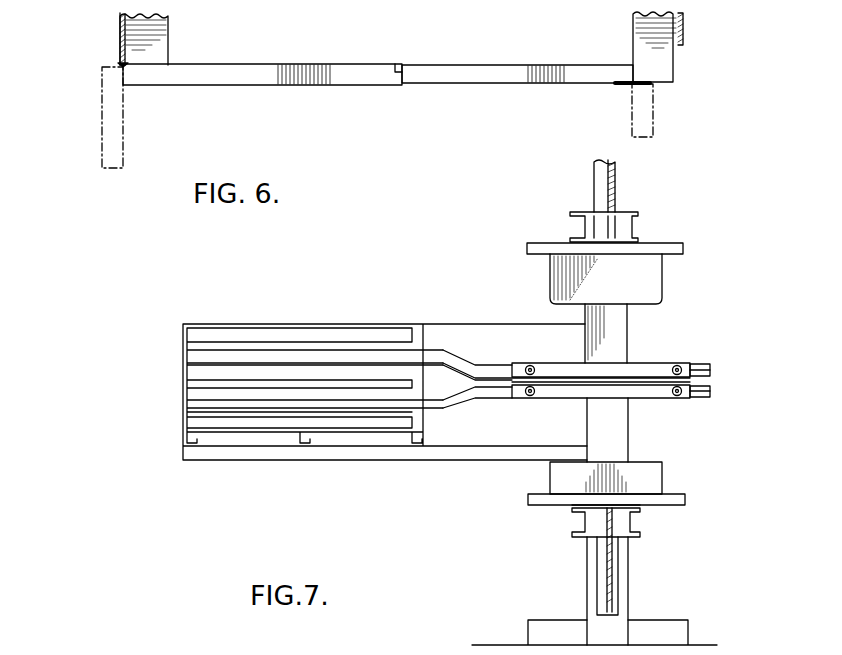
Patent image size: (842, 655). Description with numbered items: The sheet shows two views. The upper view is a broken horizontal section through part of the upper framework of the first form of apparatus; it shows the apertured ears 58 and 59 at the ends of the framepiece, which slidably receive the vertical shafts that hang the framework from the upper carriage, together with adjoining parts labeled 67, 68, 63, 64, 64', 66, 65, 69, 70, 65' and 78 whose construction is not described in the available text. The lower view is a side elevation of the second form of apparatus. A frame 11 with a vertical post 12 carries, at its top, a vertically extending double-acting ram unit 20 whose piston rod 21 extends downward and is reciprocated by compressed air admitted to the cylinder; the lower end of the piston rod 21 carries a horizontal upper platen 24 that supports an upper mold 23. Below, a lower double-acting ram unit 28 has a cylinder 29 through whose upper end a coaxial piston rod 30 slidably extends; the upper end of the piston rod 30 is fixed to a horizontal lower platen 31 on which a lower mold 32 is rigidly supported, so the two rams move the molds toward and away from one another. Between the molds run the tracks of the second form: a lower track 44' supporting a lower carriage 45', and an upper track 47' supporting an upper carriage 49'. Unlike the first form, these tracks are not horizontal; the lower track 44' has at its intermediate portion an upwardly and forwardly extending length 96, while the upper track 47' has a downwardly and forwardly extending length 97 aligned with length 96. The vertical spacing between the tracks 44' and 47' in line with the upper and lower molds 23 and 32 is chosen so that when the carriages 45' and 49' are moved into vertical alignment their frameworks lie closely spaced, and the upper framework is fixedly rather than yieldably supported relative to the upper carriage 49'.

In FIG. 6, the ear 58 is at (119, 42).
In FIG. 6, the block 67 is at (168, 24).
In FIG. 6, the joint 68 is at (121, 65).
In FIG. 6, the beam section 64 is at (262, 97).
In FIG. 6, the post 64' is at (79, 117).
In FIG. 6, the beam assembly 63 is at (266, 50).
In FIG. 6, the latch 66 is at (399, 71).
In FIG. 6, the beam section 65 is at (517, 100).
In FIG. 6, the member 78 is at (494, 2).
In FIG. 6, the ear 59 is at (683, 25).
In FIG. 6, the block 69 is at (668, 62).
In FIG. 6, the bar 70 is at (630, 88).
In FIG. 6, the post 65' is at (685, 113).
In FIG. 7, the double-acting ram unit 20 is at (614, 188).
In FIG. 7, the piston rod 21 is at (608, 230).
In FIG. 7, the upper platen 24 is at (674, 248).
In FIG. 7, the upper mold 23 is at (648, 275).
In FIG. 7, the frame 11 is at (628, 330).
In FIG. 7, the vertical post 12 is at (612, 444).
In FIG. 7, the downwardly and forwardly extending length 97 is at (463, 365).
In FIG. 7, the upwardly and forwardly extending length 96 is at (458, 397).
In FIG. 7, the upper carriage 49' is at (678, 344).
In FIG. 7, the upper track 47' is at (724, 355).
In FIG. 7, the lower track 44' is at (728, 389).
In FIG. 7, the lower carriage 45' is at (683, 414).
In FIG. 7, the lower mold 32 is at (654, 478).
In FIG. 7, the lower platen 31 is at (673, 506).
In FIG. 7, the piston rod 30 is at (607, 522).
In FIG. 7, the cylinder 29 is at (608, 559).
In FIG. 7, the lower double-acting ram unit 28 is at (617, 591).